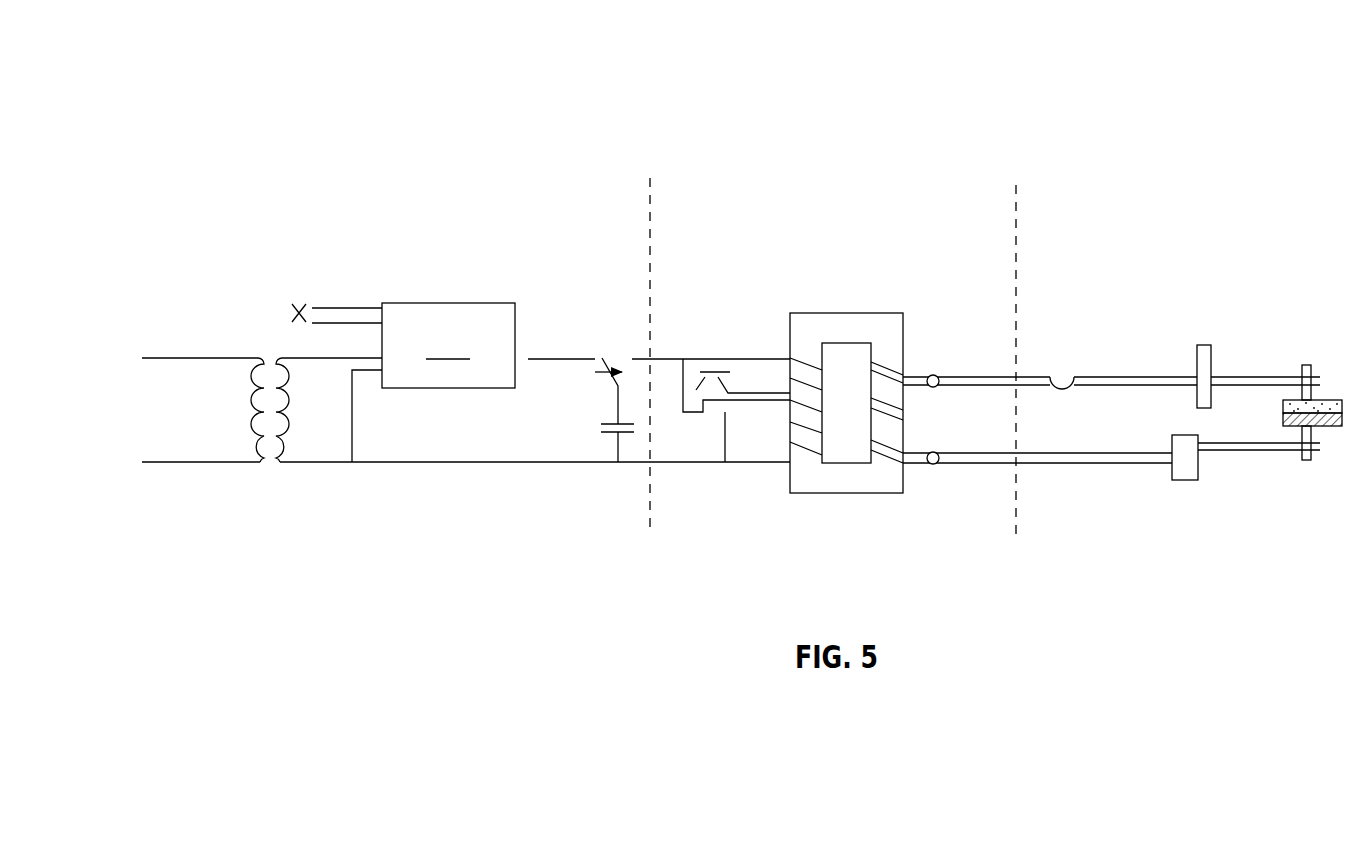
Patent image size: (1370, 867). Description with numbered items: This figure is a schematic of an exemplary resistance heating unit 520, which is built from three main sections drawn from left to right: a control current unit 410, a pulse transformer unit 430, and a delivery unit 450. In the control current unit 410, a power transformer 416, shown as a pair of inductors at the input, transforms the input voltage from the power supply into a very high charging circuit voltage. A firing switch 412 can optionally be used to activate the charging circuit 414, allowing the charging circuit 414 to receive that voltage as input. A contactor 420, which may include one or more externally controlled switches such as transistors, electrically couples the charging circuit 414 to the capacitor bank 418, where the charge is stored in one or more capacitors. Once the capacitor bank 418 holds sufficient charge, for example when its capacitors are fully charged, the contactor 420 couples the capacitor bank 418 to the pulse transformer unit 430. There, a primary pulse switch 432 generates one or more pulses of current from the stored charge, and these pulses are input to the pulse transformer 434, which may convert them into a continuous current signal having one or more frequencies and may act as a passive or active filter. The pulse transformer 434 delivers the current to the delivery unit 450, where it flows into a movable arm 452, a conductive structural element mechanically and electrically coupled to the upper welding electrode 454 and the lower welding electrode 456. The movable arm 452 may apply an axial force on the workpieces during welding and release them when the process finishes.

The resistance heating unit 520 is at (253, 107).
The control current unit 410 is at (412, 387).
The firing switch 412 is at (285, 313).
The charging circuit 414 is at (433, 382).
The power transformer 416 is at (268, 456).
The capacitor bank 418 is at (590, 437).
The contactor 420 is at (573, 350).
The pulse transformer unit 430 is at (846, 416).
The primary pulse switch 432 is at (718, 470).
The pulse transformer 434 is at (860, 517).
The delivery unit 450 is at (1133, 382).
The movable arm 452 is at (1152, 362).
The upper welding electrode 454 is at (1317, 367).
The lower welding electrode 456 is at (1317, 453).